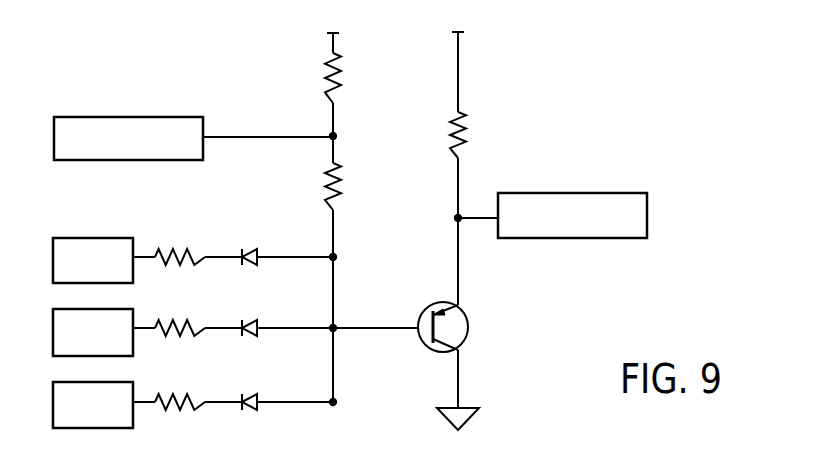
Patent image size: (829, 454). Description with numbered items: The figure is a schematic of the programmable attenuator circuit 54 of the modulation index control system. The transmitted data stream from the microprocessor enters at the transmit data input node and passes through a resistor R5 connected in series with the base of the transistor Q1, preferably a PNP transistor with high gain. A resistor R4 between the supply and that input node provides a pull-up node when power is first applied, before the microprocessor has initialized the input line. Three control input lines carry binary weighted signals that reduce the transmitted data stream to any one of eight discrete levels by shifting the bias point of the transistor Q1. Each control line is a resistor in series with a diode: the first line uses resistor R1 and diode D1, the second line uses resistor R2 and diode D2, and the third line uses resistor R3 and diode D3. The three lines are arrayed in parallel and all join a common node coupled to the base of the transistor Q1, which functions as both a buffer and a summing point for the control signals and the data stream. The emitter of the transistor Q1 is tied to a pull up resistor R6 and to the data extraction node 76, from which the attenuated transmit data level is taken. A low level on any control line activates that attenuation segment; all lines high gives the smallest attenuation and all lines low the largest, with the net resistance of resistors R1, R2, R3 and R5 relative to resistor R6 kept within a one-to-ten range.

The programmable attenuator circuit 54 is at (350, 220).
The TxDataOut node 76 is at (484, 254).
The transistor Q1 is at (463, 327).
The resistor R1 is at (180, 244).
The resistor R2 is at (180, 315).
The resistor R3 is at (180, 389).
The resistor R4 is at (352, 78).
The resistor R5 is at (352, 186).
The pull up resistor R6 is at (478, 135).
The diode D1 is at (246, 244).
The diode D2 is at (246, 315).
The diode D3 is at (246, 389).